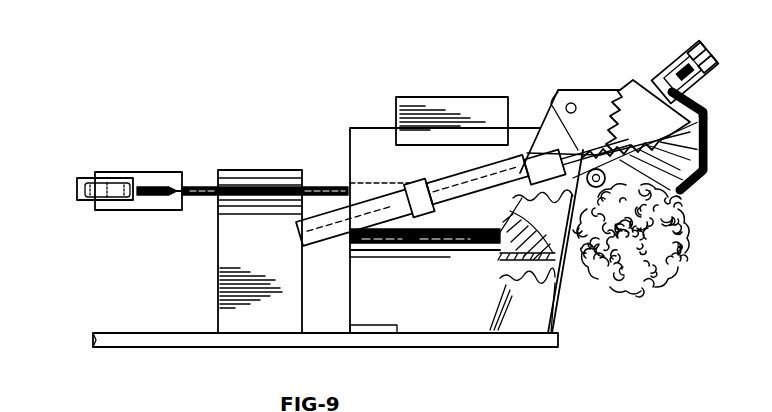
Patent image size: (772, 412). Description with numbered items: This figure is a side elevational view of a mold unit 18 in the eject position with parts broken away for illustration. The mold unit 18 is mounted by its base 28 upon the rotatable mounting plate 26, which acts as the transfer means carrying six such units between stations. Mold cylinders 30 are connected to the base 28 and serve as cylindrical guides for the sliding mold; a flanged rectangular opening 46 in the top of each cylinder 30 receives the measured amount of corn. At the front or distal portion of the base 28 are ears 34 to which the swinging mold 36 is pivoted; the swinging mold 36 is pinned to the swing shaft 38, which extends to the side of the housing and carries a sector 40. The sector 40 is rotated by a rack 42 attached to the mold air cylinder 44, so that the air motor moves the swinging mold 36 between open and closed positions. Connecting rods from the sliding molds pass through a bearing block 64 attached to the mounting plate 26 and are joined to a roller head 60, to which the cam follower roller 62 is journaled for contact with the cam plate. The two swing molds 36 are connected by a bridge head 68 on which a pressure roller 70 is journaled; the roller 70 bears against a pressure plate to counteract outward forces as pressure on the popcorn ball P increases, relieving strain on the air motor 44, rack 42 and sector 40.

The mold unit 18 is at (567, 300).
The mounting plate 26 is at (527, 346).
The base 28 is at (539, 321).
The mold cylinder 30 is at (398, 172).
The ears 34 is at (558, 90).
The swinging mold 36 is at (710, 128).
The swing shaft 38 is at (571, 102).
The sector 40 is at (598, 139).
The rack 42 is at (654, 130).
The mold air cylinder 44 is at (305, 246).
The flanged rectangular opening 46 is at (455, 96).
The roller head 60 is at (144, 181).
The cam follower roller 62 is at (78, 190).
The bearing block 64 is at (269, 248).
The bridge head 68 is at (660, 66).
The pressure roller 70 is at (700, 42).
The popcorn ball P is at (680, 260).